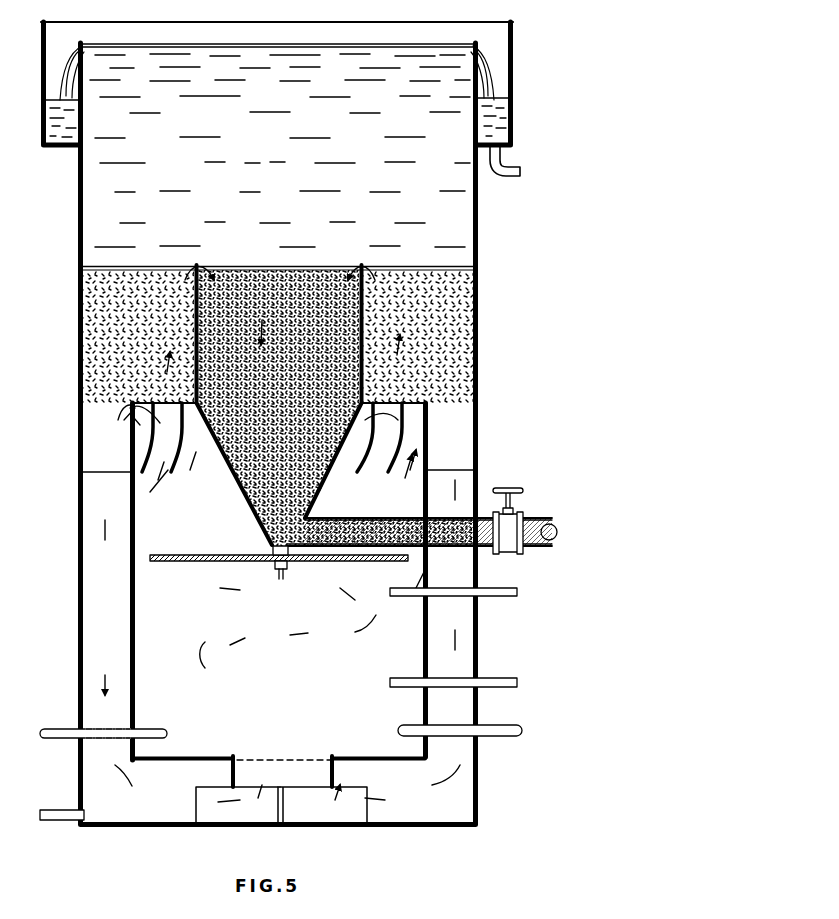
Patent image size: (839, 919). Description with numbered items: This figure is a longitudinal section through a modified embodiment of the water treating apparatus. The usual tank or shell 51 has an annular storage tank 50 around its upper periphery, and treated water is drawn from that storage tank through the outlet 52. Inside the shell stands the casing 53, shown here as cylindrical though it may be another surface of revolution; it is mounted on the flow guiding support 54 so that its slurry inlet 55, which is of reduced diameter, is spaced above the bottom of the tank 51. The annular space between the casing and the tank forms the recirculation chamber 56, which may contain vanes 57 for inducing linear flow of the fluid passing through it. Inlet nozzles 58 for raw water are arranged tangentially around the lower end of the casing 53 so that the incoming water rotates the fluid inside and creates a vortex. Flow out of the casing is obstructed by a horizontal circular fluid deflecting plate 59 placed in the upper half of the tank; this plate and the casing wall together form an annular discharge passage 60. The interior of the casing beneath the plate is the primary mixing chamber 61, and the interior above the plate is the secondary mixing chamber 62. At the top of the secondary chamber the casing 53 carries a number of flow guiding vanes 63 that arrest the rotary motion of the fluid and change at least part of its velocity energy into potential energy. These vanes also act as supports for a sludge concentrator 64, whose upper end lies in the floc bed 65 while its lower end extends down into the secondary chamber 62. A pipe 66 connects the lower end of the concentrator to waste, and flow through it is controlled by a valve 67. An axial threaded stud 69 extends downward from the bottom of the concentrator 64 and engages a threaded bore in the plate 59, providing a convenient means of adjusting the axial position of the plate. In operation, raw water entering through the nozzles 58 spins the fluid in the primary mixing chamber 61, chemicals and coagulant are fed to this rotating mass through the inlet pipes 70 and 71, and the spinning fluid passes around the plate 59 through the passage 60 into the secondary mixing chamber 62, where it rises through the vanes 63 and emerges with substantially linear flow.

The annular storage tank 50 is at (516, 36).
The tank or shell 51 is at (478, 222).
The outlet 52 is at (503, 163).
The casing 53 is at (428, 443).
The flow guiding support 54 is at (355, 812).
The slurry inlet 55 is at (245, 778).
The recirculation chamber 56 is at (115, 610).
The vanes 57 is at (90, 505).
The inlet nozzles 58 is at (505, 726).
The fluid deflecting plate 59 is at (190, 558).
The annular discharge passage 60 is at (140, 553).
The primary mixing chamber 61 is at (273, 627).
The secondary mixing chamber 62 is at (220, 513).
The flow guiding vanes 63 is at (183, 441).
The sludge concentrator 64 is at (355, 297).
The floc bed 65 is at (462, 325).
The pipe 66 is at (478, 527).
The valve 67 is at (518, 513).
The axial threaded stud 69 is at (286, 563).
The inlet pipe 70 is at (506, 679).
The inlet pipe 71 is at (510, 588).